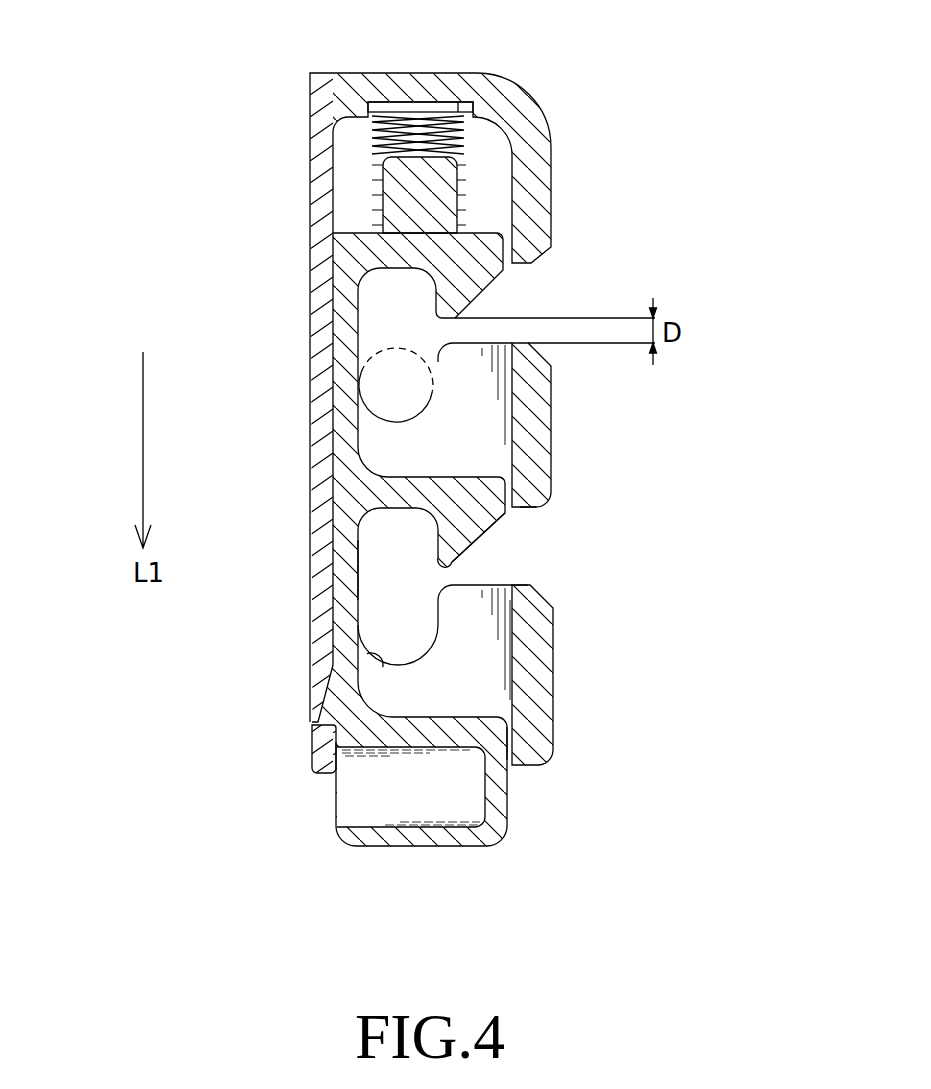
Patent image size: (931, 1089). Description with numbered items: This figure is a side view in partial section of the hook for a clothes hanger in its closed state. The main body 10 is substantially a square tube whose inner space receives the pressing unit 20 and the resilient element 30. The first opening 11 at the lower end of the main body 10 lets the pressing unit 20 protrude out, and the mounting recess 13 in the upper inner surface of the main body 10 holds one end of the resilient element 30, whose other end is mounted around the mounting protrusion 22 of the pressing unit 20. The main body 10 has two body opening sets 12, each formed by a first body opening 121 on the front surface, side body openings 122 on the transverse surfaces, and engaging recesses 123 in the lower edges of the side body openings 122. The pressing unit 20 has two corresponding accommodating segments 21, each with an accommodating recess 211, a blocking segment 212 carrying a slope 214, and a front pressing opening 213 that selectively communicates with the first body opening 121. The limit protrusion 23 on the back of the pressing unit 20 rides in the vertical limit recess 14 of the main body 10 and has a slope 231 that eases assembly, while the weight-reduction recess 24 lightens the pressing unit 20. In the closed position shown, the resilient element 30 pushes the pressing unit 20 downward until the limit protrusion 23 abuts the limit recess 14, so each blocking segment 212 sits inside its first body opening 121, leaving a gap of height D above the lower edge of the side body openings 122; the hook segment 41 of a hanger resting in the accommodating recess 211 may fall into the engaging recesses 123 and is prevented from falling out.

The main body 10 is at (540, 66).
The first opening 11 is at (506, 760).
The body opening set 12 is at (522, 285).
The mounting recess 13 is at (462, 108).
The limit recess 14 is at (320, 605).
The pressing unit 20 is at (474, 866).
The accommodating segment 21 is at (520, 389).
The mounting protrusion 22 is at (453, 175).
The limit protrusion 23 is at (308, 720).
The weight-reduction recess 24 is at (356, 799).
The resilient element 30 is at (464, 151).
The hook segment 41 is at (378, 354).
The first body opening 121 is at (516, 586).
The side body opening 122 is at (452, 567).
The engaging recess 123 is at (383, 653).
The accommodating recess 211 is at (380, 543).
The blocking segment 212 is at (483, 592).
The front pressing opening 213 is at (490, 675).
The slope 214 is at (540, 508).
The slope 231 is at (328, 705).